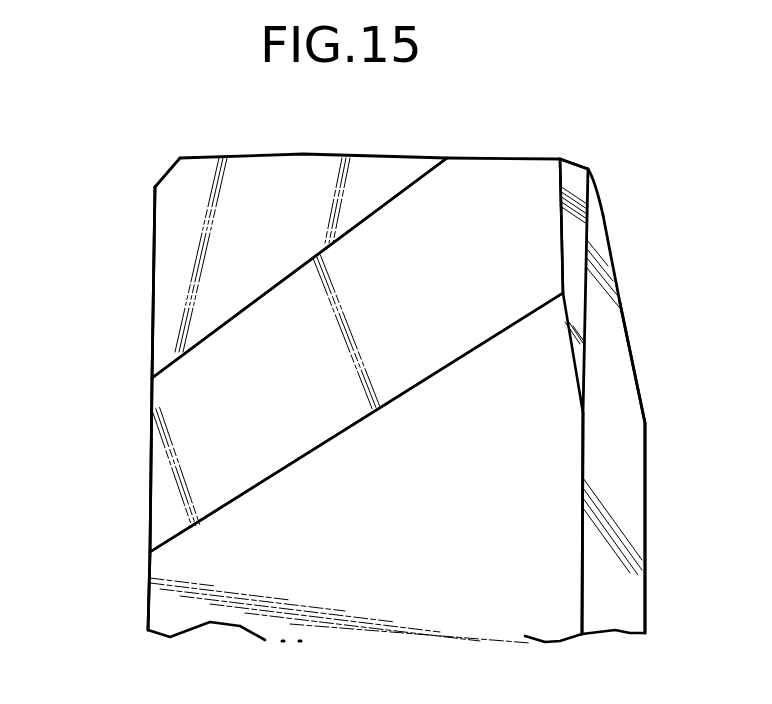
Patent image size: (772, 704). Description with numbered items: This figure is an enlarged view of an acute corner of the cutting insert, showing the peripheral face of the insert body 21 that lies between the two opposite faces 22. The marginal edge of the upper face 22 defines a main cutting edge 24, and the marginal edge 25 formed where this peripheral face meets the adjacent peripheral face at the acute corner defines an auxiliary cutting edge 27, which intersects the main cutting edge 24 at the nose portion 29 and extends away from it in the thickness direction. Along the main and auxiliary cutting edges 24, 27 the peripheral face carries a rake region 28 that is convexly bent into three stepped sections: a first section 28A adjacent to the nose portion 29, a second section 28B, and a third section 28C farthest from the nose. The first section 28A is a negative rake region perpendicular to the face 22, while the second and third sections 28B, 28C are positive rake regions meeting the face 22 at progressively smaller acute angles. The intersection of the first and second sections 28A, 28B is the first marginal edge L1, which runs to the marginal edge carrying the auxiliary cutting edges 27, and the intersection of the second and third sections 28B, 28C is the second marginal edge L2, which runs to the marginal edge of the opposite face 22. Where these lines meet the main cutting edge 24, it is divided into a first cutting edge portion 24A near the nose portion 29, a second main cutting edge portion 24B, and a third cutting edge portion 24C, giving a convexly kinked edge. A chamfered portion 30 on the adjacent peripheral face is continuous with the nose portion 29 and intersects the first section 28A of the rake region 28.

The insert body 21 is at (633, 582).
The face 22 is at (626, 487).
The main cutting edge 24 is at (80, 325).
The first cutting edge portion 24A is at (152, 302).
The second main cutting edge portion 24B is at (152, 392).
The third cutting edge portion 24C is at (148, 570).
The marginal edge 25 is at (388, 158).
The auxiliary cutting edge 27 is at (243, 155).
The rake region 28 is at (563, 552).
The first section 28A is at (283, 243).
The second section 28B is at (430, 337).
The third section 28C is at (515, 397).
The nose portion 29 is at (582, 151).
The chamfered portion 30 is at (575, 310).
The first marginal edge L1 is at (367, 218).
The second marginal edge L2 is at (498, 333).